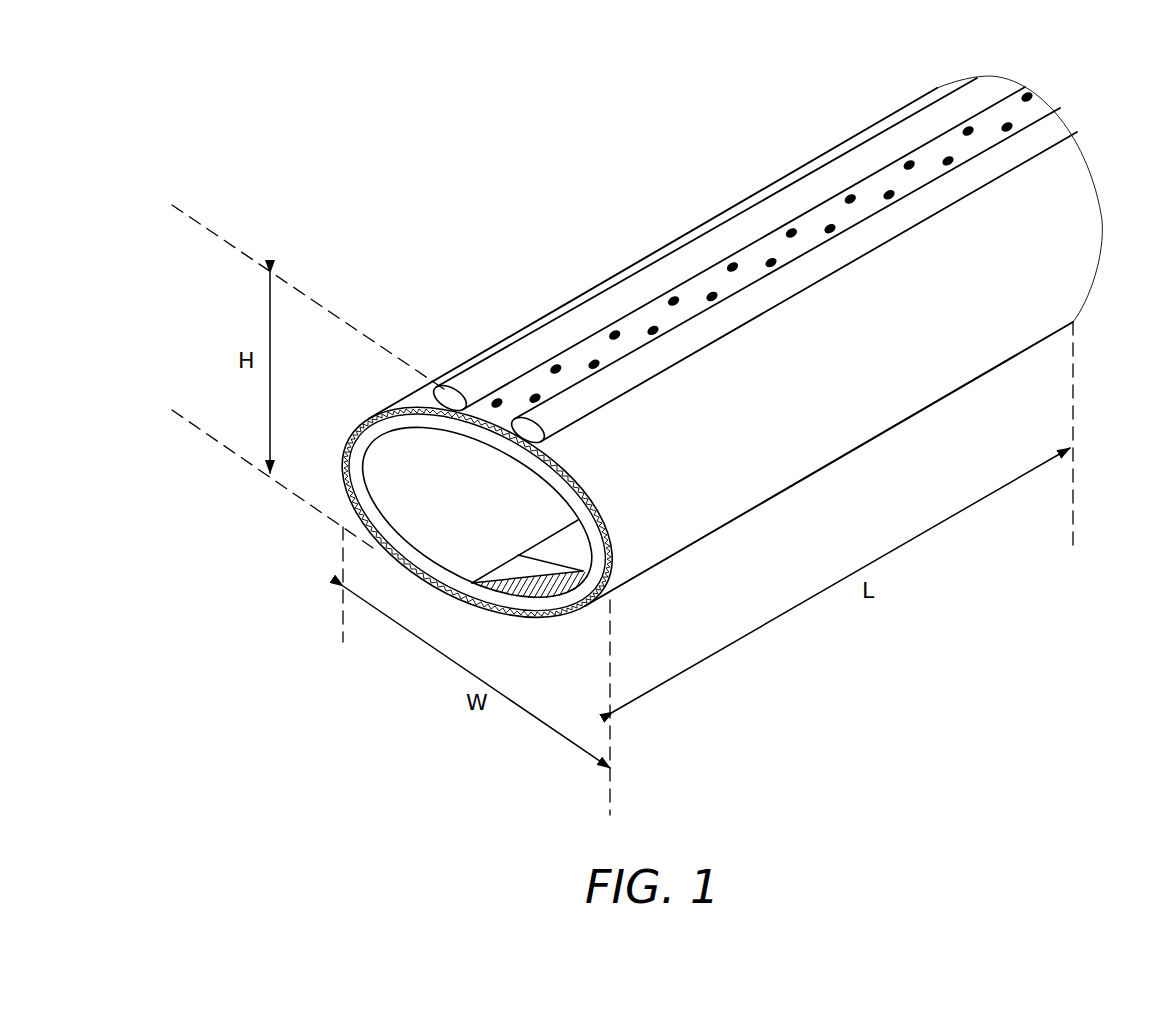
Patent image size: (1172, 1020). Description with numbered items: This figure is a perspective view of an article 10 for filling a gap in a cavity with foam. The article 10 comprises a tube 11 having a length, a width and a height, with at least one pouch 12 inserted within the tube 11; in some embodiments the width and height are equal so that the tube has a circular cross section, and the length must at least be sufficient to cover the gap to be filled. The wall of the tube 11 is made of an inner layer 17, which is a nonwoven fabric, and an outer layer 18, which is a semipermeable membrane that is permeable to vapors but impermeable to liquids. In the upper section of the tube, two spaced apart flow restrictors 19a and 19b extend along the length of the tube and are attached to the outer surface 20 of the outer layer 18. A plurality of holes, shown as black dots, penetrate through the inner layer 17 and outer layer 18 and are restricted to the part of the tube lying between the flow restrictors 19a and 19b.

The article 10 is at (308, 152).
The tube 11 is at (1094, 178).
The pouch 12 is at (518, 555).
The inner layer 17 is at (412, 422).
The outer layer 18 is at (352, 433).
The flow restrictor 19a is at (688, 262).
The flow restrictor 19b is at (847, 250).
The outer surface 20 is at (428, 408).